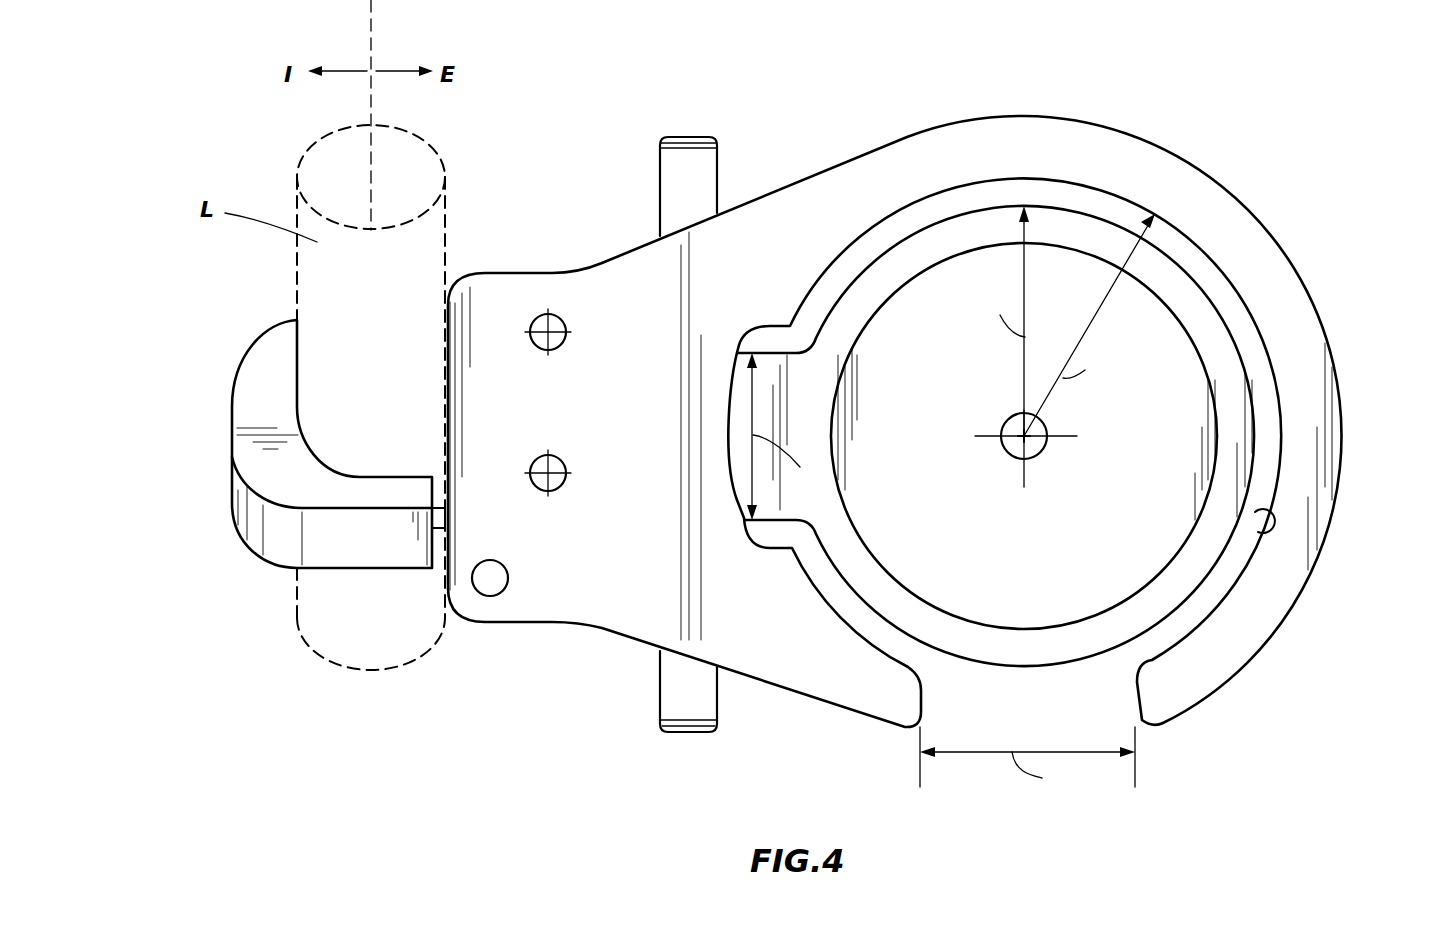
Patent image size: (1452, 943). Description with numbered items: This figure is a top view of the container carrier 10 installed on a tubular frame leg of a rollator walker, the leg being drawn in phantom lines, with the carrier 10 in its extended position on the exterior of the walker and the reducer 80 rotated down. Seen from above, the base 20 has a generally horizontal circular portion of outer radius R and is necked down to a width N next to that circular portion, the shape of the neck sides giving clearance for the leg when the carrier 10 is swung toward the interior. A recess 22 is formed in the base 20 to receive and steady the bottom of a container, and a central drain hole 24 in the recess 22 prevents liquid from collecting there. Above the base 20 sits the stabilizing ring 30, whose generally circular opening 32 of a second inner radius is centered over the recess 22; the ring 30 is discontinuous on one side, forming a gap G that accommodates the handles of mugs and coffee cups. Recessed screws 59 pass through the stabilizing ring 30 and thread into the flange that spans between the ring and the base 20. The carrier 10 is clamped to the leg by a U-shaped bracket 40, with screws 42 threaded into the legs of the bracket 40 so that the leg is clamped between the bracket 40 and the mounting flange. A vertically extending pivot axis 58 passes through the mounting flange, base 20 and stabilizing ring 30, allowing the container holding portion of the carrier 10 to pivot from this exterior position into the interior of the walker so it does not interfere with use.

The container carrier 10 is at (840, 70).
The base 20 is at (1240, 329).
The recess 22 is at (1163, 327).
The central drain hole 24 is at (1008, 453).
The stabilizing ring 30 is at (1170, 176).
The circular opening 32 is at (1262, 535).
The U-shaped bracket 40 is at (232, 468).
The screws 42 is at (443, 535).
The pivot axis 58 is at (492, 578).
The recessed screws 59 is at (555, 347).
The reducer 80 is at (698, 735).